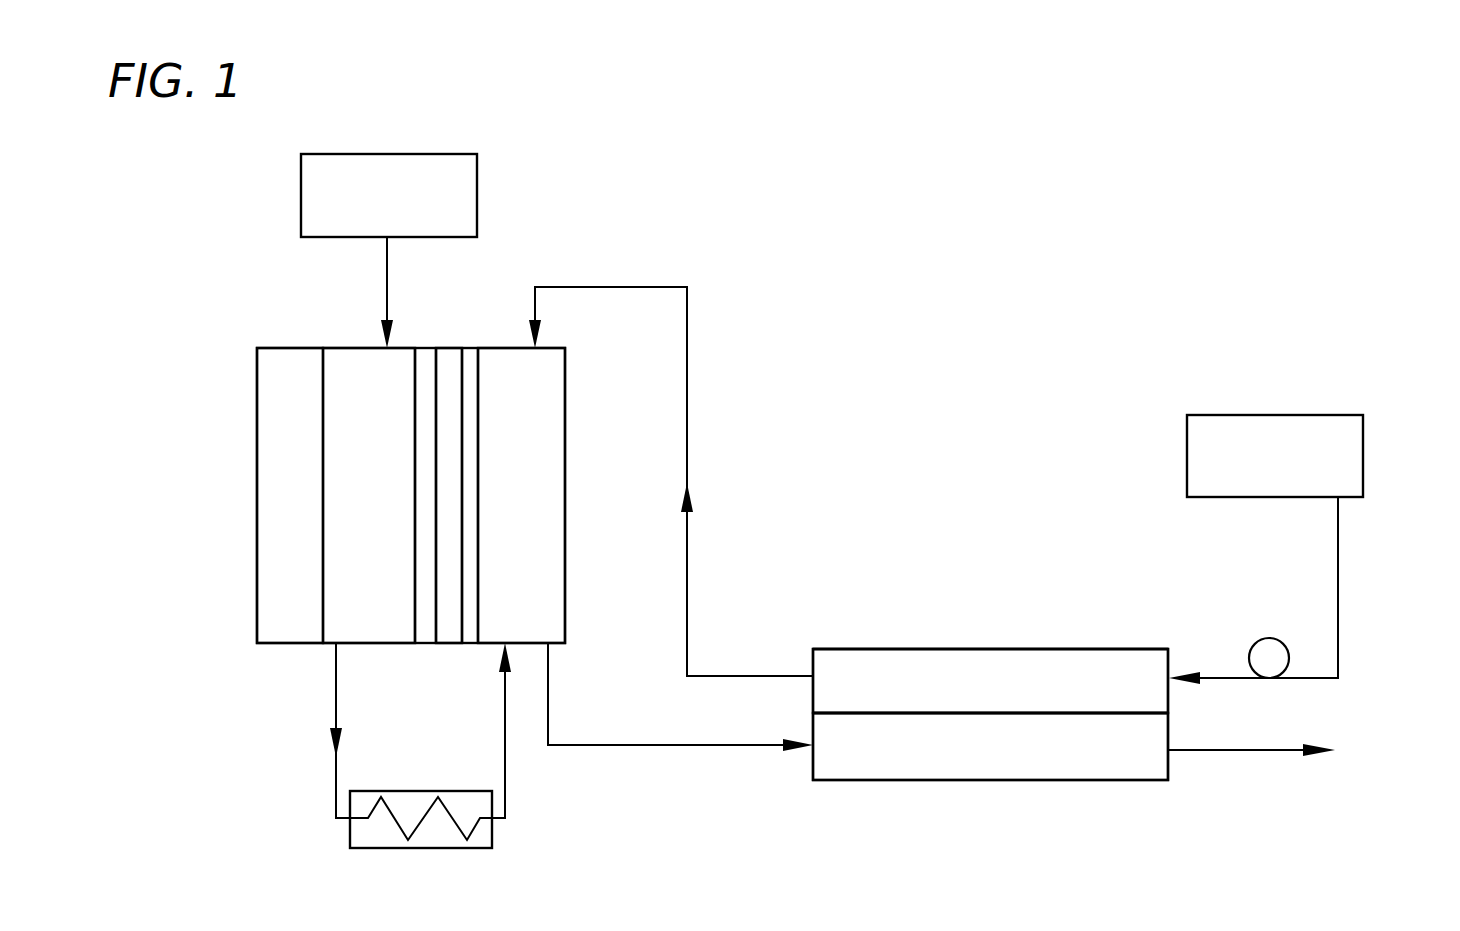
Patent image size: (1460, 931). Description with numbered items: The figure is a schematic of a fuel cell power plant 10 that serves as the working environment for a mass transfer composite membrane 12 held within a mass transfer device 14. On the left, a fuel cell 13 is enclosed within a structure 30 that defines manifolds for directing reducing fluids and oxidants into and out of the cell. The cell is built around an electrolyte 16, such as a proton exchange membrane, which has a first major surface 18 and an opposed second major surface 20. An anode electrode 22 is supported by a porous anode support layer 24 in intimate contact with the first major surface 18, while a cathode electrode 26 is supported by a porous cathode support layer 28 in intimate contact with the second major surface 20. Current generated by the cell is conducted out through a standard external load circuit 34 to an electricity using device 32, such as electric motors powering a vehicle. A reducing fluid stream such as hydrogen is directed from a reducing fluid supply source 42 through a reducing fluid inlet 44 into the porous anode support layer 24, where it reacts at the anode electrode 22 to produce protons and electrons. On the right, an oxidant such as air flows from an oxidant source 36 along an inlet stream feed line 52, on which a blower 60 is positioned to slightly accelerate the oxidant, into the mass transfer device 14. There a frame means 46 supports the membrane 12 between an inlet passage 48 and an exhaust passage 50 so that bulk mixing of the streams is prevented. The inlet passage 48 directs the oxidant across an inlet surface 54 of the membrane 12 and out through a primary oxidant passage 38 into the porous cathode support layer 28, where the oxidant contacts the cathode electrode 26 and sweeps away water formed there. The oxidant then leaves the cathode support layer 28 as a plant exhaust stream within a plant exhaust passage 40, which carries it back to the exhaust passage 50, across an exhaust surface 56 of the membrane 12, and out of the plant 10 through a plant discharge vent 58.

The fuel cell power plant 10 is at (945, 170).
The mass transfer composite membrane 12 is at (1112, 733).
The fuel cell 13 is at (278, 318).
The mass transfer device 14 is at (993, 582).
The electrolyte 16 is at (455, 356).
The first major surface 18 is at (431, 625).
The second major surface 20 is at (455, 625).
The anode electrode 22 is at (422, 400).
The porous anode support layer 24 is at (354, 546).
The cathode electrode 26 is at (470, 382).
The porous cathode support layer 28 is at (499, 546).
The structure 30 is at (290, 513).
The electricity using device 32 is at (440, 838).
The external load circuit 34 is at (333, 712).
The oxidant source 36 is at (1325, 413).
The primary oxidant passage 38 is at (688, 355).
The plant exhaust passage 40 is at (612, 747).
The reducing fluid supply source 42 is at (480, 190).
The reducing fluid inlet 44 is at (385, 290).
The frame means 46 is at (1085, 648).
The inlet passage 48 is at (840, 660).
The exhaust passage 50 is at (848, 760).
The inlet stream feed line 52 is at (1340, 618).
The inlet surface 54 is at (1000, 711).
The exhaust surface 56 is at (945, 713).
The plant discharge vent 58 is at (1205, 750).
The blower 60 is at (1275, 638).